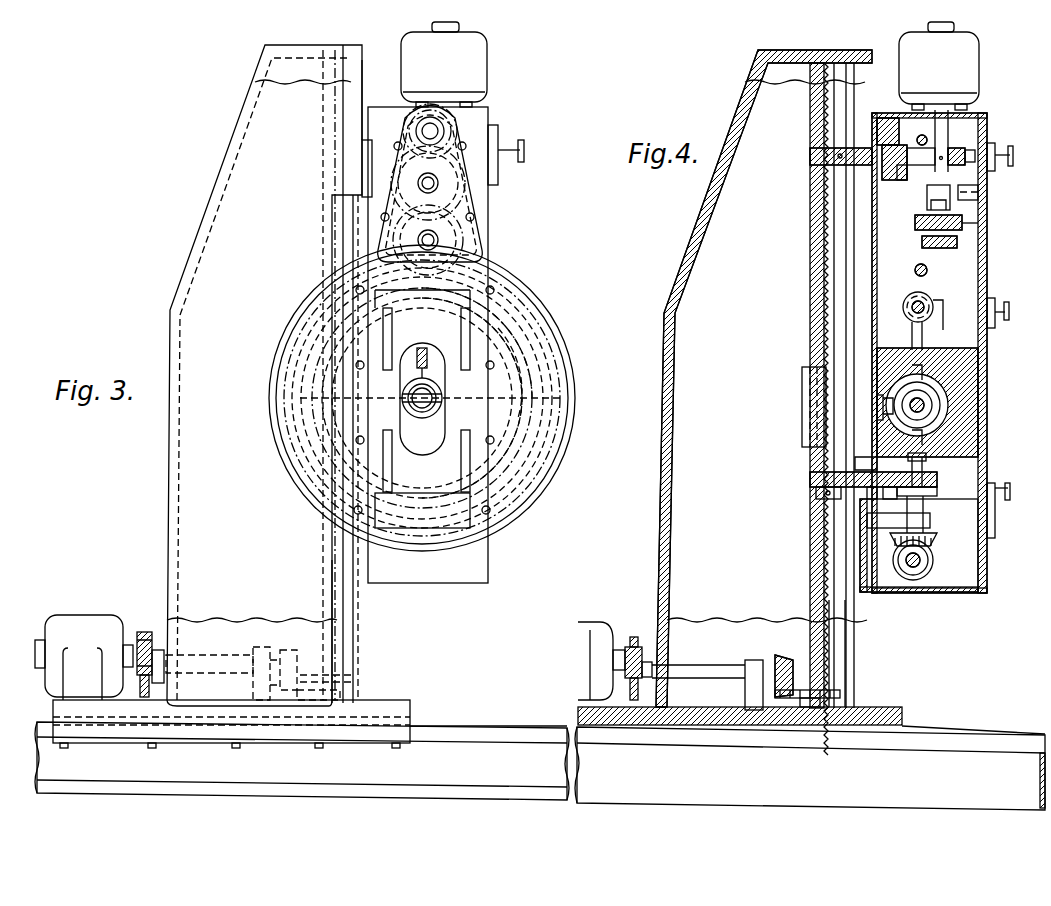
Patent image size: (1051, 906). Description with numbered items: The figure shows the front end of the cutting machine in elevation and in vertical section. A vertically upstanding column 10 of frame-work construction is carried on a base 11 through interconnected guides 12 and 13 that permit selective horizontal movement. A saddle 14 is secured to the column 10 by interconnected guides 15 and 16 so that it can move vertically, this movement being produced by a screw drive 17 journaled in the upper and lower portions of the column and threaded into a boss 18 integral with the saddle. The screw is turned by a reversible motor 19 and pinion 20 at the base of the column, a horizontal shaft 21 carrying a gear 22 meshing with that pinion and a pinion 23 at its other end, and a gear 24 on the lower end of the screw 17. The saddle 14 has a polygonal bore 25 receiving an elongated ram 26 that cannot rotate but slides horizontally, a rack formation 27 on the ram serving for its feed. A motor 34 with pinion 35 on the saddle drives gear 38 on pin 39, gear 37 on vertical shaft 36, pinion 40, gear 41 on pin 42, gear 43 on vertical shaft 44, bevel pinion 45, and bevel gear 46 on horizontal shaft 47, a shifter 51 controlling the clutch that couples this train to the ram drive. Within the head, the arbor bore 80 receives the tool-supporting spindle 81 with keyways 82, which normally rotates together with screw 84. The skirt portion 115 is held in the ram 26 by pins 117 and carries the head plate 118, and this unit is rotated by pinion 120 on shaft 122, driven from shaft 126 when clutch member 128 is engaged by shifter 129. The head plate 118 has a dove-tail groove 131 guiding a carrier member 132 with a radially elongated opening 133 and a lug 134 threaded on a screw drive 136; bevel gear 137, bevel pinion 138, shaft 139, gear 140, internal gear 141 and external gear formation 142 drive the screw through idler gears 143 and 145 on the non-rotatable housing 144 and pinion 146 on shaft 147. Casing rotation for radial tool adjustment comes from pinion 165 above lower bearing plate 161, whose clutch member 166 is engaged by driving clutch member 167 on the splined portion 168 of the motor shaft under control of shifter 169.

In FIG. 3, the column 10 is at (172, 473).
In FIG. 4, the column 10 is at (661, 487).
In FIG. 3, the base 11 is at (302, 761).
In FIG. 4, the base 11 is at (810, 768).
In FIG. 3, the guide 12 is at (385, 705).
In FIG. 4, the guide 12 is at (888, 707).
In FIG. 3, the guide 13 is at (462, 732).
In FIG. 4, the guide 13 is at (966, 733).
In FIG. 3, the saddle 14 is at (482, 129).
In FIG. 4, the saddle 14 is at (987, 377).
In FIG. 3, the guide 15 is at (362, 131).
In FIG. 4, the guide 15 is at (840, 655).
In FIG. 3, the guide 16 is at (360, 214).
In FIG. 3, the screw drive 17 is at (302, 564).
In FIG. 4, the screw drive 17 is at (810, 575).
In FIG. 3, the boss 18 is at (300, 474).
In FIG. 4, the boss 18 is at (802, 411).
In FIG. 3, the motor 19 is at (70, 620).
In FIG. 4, the motor 19 is at (590, 622).
In FIG. 3, the pinion 20 is at (128, 645).
In FIG. 4, the pinion 20 is at (628, 650).
In FIG. 3, the horizontal shaft 21 is at (215, 655).
In FIG. 4, the horizontal shaft 21 is at (694, 667).
In FIG. 3, the gear 22 is at (145, 632).
In FIG. 4, the gear 22 is at (636, 637).
In FIG. 3, the pinion 23 is at (290, 650).
In FIG. 4, the pinion 23 is at (784, 655).
In FIG. 3, the gear 24 is at (338, 677).
In FIG. 4, the gear 24 is at (840, 693).
In FIG. 4, the bore 25 is at (960, 436).
In FIG. 4, the ram 26 is at (944, 414).
In FIG. 4, the rack formation 27 is at (885, 404).
In FIG. 3, the motor 34 is at (444, 64).
In FIG. 4, the motor 34 is at (939, 66).
In FIG. 4, the pinion 35 is at (965, 152).
In FIG. 4, the vertical shaft 36 is at (840, 217).
In FIG. 4, the gear 37 is at (810, 155).
In FIG. 4, the gear 38 is at (900, 118).
In FIG. 4, the pin 39 is at (890, 145).
In FIG. 4, the pinion 40 is at (810, 478).
In FIG. 4, the gear 41 is at (873, 496).
In FIG. 4, the pin 42 is at (892, 496).
In FIG. 4, the gear 43 is at (937, 493).
In FIG. 4, the vertical shaft 44 is at (924, 505).
In FIG. 4, the bevel pinion 45 is at (898, 549).
In FIG. 4, the bevel gear 46 is at (930, 565).
In FIG. 4, the horizontal shaft 47 is at (912, 571).
In FIG. 4, the shifter 51 is at (992, 511).
In FIG. 4, the cylindrical bore 80 is at (880, 435).
In FIG. 3, the tool-supporting spindle 81 is at (430, 423).
In FIG. 4, the tool-supporting spindle 81 is at (905, 360).
In FIG. 4, the keyways 82 is at (978, 365).
In FIG. 4, the screw 84 is at (877, 395).
In FIG. 4, the skirt portion 115 is at (986, 395).
In FIG. 4, the pins 117 is at (920, 350).
In FIG. 3, the head plate 118 is at (530, 309).
In FIG. 3, the pinion 120 is at (452, 237).
In FIG. 4, the horizontal shaft 122 is at (927, 270).
In FIG. 4, the horizontal shaft 126 is at (912, 305).
In FIG. 4, the driven clutch member 128 is at (934, 301).
In FIG. 4, the shifter 129 is at (996, 319).
In FIG. 3, the dove-tail groove 131 is at (480, 261).
In FIG. 3, the carrier member 132 is at (540, 354).
In FIG. 3, the radially elongated opening 133 is at (432, 447).
In FIG. 3, the lug 134 is at (422, 391).
In FIG. 3, the screw drive 136 is at (440, 394).
In FIG. 3, the bevel gear 137 is at (330, 304).
In FIG. 3, the bevel pinion 138 is at (293, 339).
In FIG. 3, the horizontal shaft 139 is at (530, 321).
In FIG. 3, the gear 140 is at (300, 321).
In FIG. 3, the internal gear 141 is at (560, 381).
In FIG. 3, the external gear formation 142 is at (545, 339).
In FIG. 3, the idler gear 143 is at (472, 221).
In FIG. 3, the housing 144 is at (528, 294).
In FIG. 3, the idler gear 145 is at (470, 164).
In FIG. 3, the pinion 146 is at (450, 137).
In FIG. 3, the horizontal shaft 147 is at (430, 127).
In FIG. 4, the horizontal shaft 147 is at (917, 130).
In FIG. 4, the lower bearing plate 161 is at (920, 245).
In FIG. 4, the pinion 165 is at (978, 225).
In FIG. 4, the driven clutch member 166 is at (915, 217).
In FIG. 4, the driving clutch member 167 is at (927, 201).
In FIG. 4, the splined portion 168 is at (941, 177).
In FIG. 3, the shifter 169 is at (498, 161).
In FIG. 4, the shifter 169 is at (995, 175).